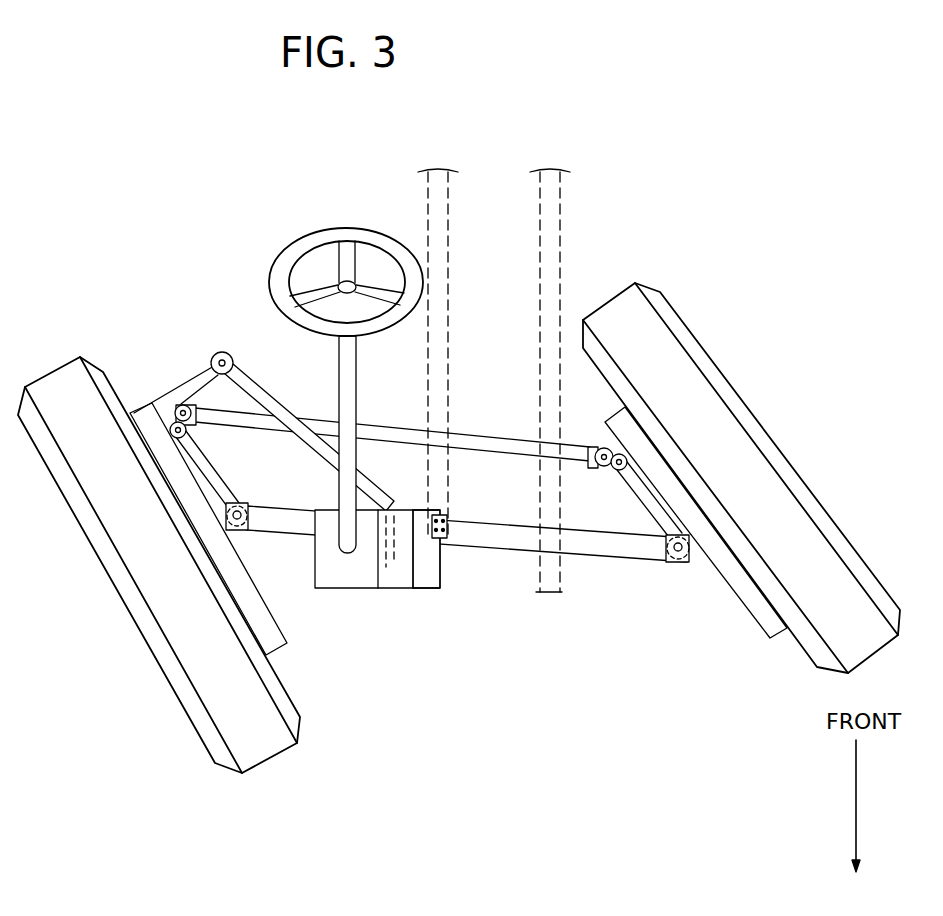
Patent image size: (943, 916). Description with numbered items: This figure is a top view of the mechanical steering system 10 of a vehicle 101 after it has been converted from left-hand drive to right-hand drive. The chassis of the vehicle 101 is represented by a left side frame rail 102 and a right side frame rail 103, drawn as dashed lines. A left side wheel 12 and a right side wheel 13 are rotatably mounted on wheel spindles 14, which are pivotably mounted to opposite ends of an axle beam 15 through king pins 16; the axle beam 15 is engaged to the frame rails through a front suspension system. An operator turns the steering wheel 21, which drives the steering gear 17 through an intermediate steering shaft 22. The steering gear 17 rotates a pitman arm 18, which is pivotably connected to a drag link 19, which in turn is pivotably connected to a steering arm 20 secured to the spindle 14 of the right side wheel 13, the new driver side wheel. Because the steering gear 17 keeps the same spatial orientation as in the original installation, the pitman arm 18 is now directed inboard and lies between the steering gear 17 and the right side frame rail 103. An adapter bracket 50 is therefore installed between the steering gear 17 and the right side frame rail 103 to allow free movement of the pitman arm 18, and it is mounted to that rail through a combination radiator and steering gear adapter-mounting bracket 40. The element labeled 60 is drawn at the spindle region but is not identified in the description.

The steering system 10 is at (453, 705).
The left side wheel 12 is at (823, 677).
The right side wheel 13 is at (272, 772).
The wheel spindle 14 is at (287, 652).
The axle beam 15 is at (623, 552).
The king pin 16 is at (240, 500).
The steering gear 17 is at (348, 594).
The pitman arm 18 is at (393, 580).
The drag link 19 is at (276, 390).
The steering arm 20 is at (179, 372).
The steering wheel 21 is at (280, 252).
The intermediate steering shaft 22 is at (362, 388).
The combination radiator and steering gear adapter-mounting bracket 40 is at (435, 582).
The adapter bracket 50 is at (406, 520).
The wheel spindle 60 is at (252, 530).
The vehicle 101 is at (676, 195).
The left side frame rail 102 is at (534, 408).
The right side frame rail 103 is at (426, 212).